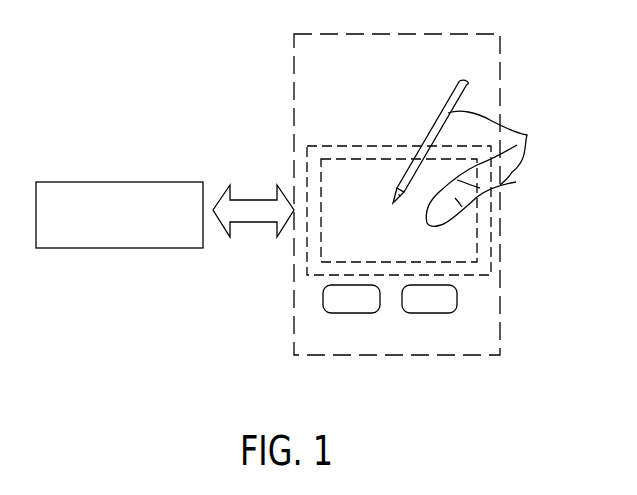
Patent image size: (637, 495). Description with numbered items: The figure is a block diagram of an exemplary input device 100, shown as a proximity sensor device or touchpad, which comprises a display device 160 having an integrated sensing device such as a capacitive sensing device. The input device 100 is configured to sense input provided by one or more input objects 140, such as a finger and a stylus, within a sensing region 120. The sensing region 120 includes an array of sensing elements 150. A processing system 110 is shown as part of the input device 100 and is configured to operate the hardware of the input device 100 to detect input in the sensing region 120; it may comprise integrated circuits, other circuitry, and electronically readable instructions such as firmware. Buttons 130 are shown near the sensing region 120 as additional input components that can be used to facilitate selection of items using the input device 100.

The input device 100 is at (255, 65).
The processing system 110 is at (78, 182).
The sensing region 120 is at (483, 237).
The buttons 130 is at (355, 315).
The input objects 140 is at (476, 168).
The array of sensing elements 150 is at (358, 159).
The display device 160 is at (500, 58).